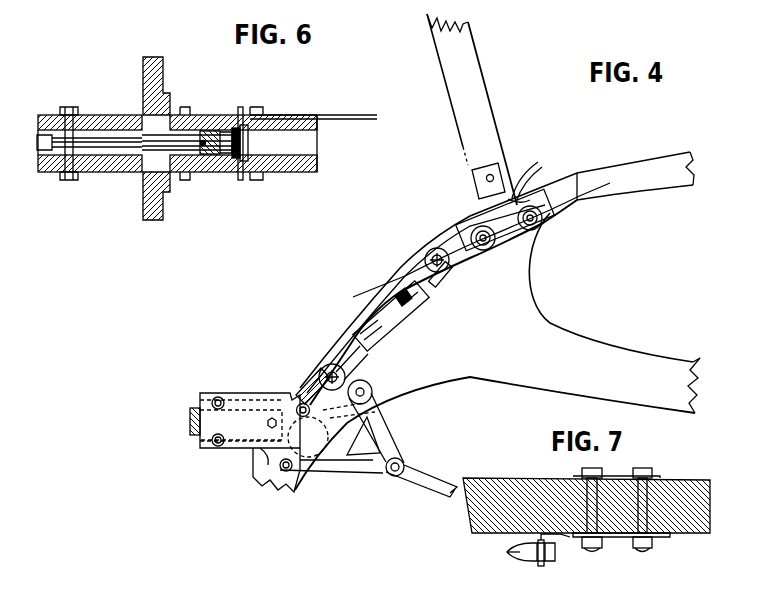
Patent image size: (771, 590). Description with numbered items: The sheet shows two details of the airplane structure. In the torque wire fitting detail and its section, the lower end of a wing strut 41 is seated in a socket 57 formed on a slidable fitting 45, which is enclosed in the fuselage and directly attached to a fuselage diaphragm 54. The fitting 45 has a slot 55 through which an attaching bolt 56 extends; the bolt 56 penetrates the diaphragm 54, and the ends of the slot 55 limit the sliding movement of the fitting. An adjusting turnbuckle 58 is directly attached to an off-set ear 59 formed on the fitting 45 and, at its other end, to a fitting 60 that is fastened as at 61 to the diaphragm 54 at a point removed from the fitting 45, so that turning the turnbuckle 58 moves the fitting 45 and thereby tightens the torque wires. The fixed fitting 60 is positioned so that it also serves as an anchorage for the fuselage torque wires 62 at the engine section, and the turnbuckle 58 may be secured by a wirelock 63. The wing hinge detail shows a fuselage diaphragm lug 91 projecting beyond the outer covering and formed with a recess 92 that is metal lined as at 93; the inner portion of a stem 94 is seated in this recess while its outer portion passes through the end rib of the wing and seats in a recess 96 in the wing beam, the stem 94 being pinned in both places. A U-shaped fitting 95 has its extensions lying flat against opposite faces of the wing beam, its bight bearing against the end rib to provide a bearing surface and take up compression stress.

In FIG. 4, the wing strut 41 is at (480, 87).
In FIG. 4, the slidable fitting 45 is at (490, 218).
In FIG. 7, the slidable fitting 45 is at (617, 538).
In FIG. 4, the fuselage diaphragm 54 is at (625, 174).
In FIG. 7, the fuselage diaphragm 54 is at (693, 490).
In FIG. 4, the slot 55 is at (552, 212).
In FIG. 7, the slot 55 is at (665, 536).
In FIG. 4, the attaching bolt 56 is at (536, 193).
In FIG. 7, the attaching bolt 56 is at (646, 550).
In FIG. 4, the socket 57 is at (495, 174).
In FIG. 4, the turnbuckle 58 is at (372, 320).
In FIG. 7, the turnbuckle 58 is at (510, 556).
In FIG. 4, the off-set ear 59 is at (466, 256).
In FIG. 7, the off-set ear 59 is at (556, 548).
In FIG. 4, the fitting 60 is at (300, 402).
In FIG. 4, the fastening 61 is at (290, 472).
In FIG. 4, the fuselage torque wire 62 is at (524, 355).
In FIG. 4, the wirelock 63 is at (396, 298).
In FIG. 6, the lug 91 is at (228, 172).
In FIG. 4, the lug 91 is at (237, 395).
In FIG. 6, the recess 92 is at (230, 125).
In FIG. 4, the recess 92 is at (267, 408).
In FIG. 6, the metal lining 93 is at (215, 128).
In FIG. 4, the metal lining 93 is at (190, 426).
In FIG. 6, the stem 94 is at (178, 150).
In FIG. 6, the U-shaped fitting 95 is at (110, 115).
In FIG. 6, the recess 96 is at (100, 150).